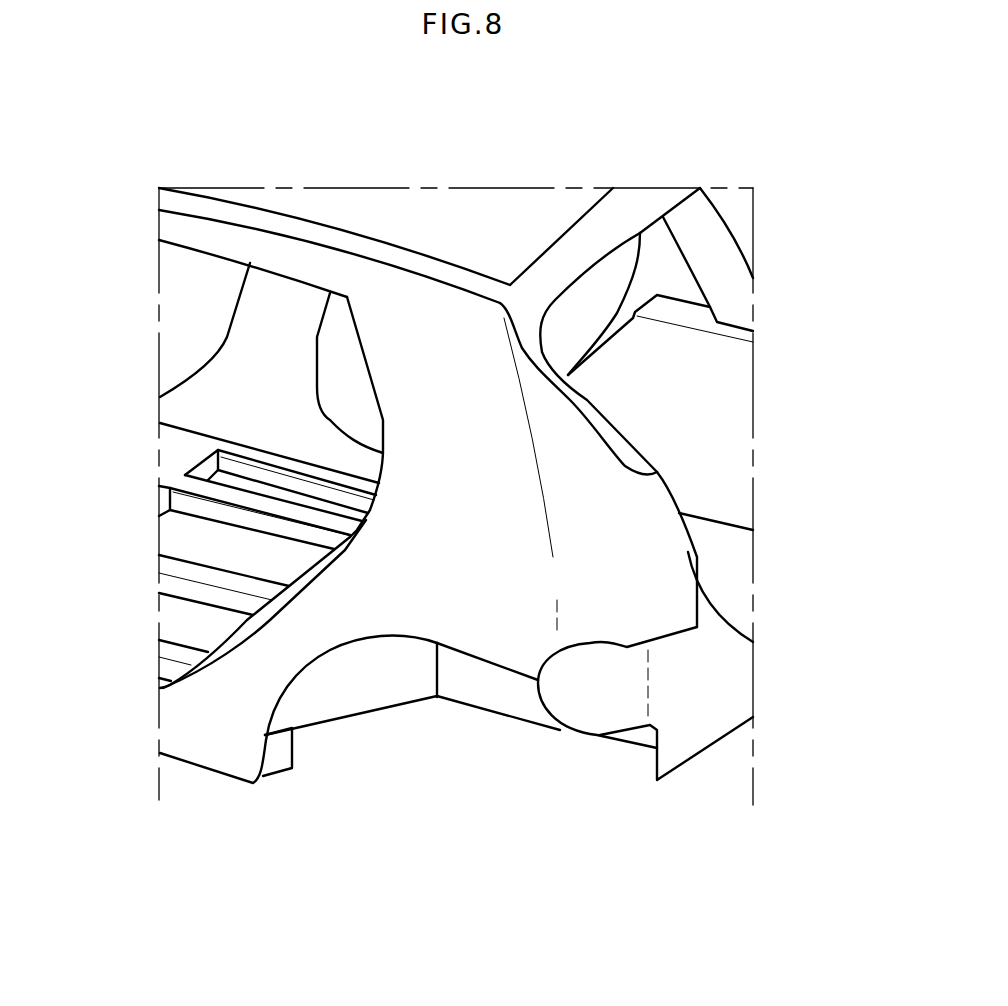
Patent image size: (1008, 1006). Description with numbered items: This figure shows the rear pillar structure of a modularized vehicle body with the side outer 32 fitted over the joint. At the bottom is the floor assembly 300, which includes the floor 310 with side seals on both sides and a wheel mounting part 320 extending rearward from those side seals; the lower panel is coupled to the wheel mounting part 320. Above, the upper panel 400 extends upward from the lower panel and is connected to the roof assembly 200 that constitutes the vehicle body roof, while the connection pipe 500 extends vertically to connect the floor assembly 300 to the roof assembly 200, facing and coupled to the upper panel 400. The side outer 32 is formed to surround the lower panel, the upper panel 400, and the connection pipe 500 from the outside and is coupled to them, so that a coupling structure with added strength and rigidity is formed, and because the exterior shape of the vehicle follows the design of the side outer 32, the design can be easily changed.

The roof assembly 200 is at (407, 224).
The upper panel 400 is at (627, 268).
The connection pipe 500 is at (743, 226).
The wheel mounting part 320 is at (717, 425).
The side outer 32 is at (463, 567).
The floor 310 is at (167, 567).
The floor assembly 300 is at (355, 744).